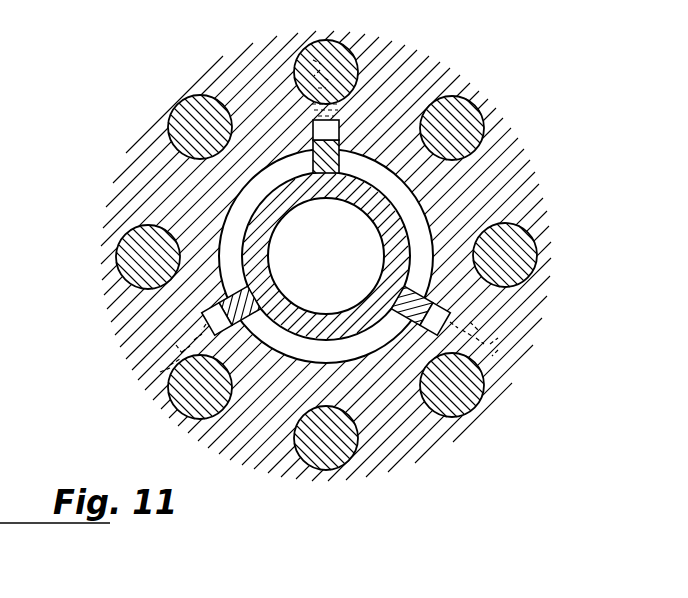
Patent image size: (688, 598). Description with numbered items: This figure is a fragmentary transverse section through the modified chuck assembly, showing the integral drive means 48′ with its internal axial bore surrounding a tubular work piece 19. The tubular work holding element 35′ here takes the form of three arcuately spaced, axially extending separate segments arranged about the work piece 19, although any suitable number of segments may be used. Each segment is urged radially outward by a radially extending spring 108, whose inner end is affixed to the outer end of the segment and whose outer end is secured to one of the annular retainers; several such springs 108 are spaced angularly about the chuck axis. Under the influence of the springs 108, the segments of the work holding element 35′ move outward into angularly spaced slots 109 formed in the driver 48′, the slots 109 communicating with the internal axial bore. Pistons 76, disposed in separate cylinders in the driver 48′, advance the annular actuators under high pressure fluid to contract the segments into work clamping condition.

The integral drive means 48′ is at (167, 189).
The tubular work piece 19 is at (395, 262).
The tubular work holding element 35′ is at (317, 168).
The slots 109 is at (340, 128).
The springs 108 is at (113, 403).
The pistons 76 is at (462, 122).